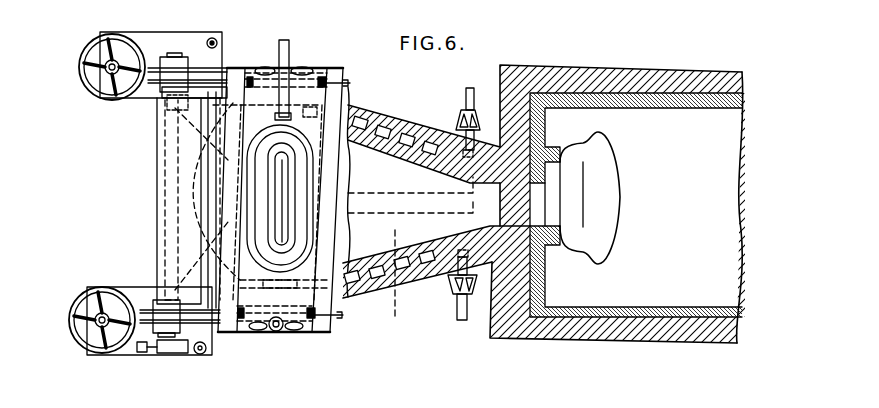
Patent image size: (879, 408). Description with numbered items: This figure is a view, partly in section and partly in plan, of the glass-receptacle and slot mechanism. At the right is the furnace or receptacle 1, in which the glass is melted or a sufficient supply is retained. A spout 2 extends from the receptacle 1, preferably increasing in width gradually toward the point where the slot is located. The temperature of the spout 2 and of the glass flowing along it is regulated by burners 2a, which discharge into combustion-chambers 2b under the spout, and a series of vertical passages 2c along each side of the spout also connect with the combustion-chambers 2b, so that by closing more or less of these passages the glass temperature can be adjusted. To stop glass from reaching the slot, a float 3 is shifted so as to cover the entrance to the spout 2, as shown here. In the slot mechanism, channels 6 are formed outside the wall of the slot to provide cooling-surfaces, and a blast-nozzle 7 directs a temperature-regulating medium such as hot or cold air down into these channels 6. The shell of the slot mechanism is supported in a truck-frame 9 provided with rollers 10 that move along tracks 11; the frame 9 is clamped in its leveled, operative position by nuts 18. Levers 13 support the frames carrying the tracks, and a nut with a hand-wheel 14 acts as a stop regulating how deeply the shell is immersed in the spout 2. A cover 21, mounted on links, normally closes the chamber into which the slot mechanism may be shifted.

The furnace or receptacle 1 is at (544, 204).
The spout 2 is at (429, 130).
The burners 2a is at (468, 89).
The combustion-chambers 2b is at (380, 112).
The vertical passages 2c is at (400, 146).
The float 3 is at (612, 192).
The channels 6 is at (290, 225).
The blast-nozzle 7 is at (310, 172).
The frame 9 is at (343, 69).
The rollers 10 is at (228, 68).
The tracks 11 is at (188, 70).
The lever 13 is at (153, 64).
The hand-wheel 14 is at (80, 78).
The nuts 18 is at (275, 65).
The cover 21 is at (205, 130).